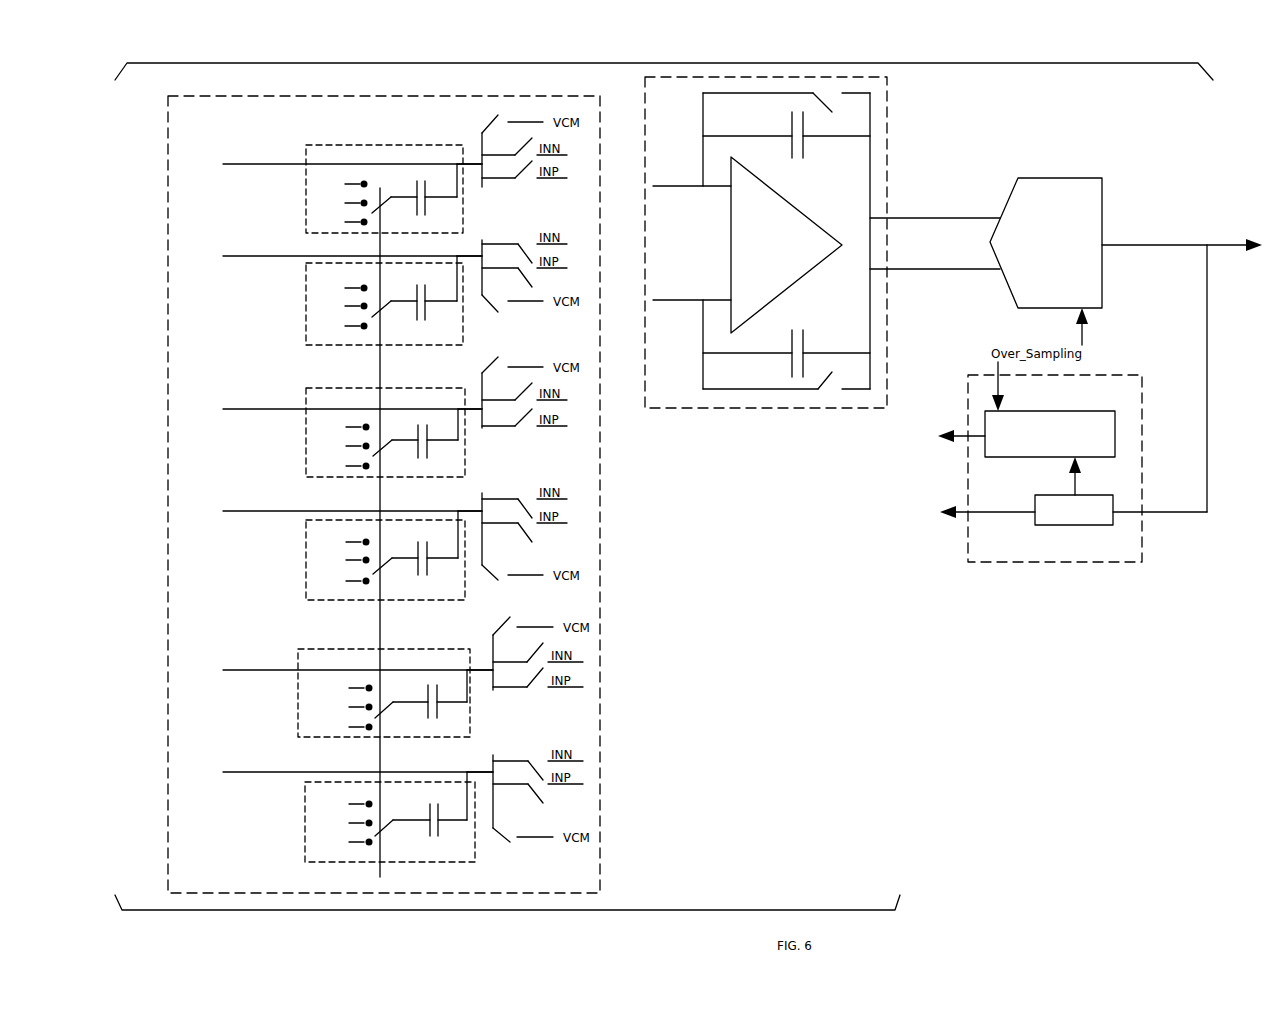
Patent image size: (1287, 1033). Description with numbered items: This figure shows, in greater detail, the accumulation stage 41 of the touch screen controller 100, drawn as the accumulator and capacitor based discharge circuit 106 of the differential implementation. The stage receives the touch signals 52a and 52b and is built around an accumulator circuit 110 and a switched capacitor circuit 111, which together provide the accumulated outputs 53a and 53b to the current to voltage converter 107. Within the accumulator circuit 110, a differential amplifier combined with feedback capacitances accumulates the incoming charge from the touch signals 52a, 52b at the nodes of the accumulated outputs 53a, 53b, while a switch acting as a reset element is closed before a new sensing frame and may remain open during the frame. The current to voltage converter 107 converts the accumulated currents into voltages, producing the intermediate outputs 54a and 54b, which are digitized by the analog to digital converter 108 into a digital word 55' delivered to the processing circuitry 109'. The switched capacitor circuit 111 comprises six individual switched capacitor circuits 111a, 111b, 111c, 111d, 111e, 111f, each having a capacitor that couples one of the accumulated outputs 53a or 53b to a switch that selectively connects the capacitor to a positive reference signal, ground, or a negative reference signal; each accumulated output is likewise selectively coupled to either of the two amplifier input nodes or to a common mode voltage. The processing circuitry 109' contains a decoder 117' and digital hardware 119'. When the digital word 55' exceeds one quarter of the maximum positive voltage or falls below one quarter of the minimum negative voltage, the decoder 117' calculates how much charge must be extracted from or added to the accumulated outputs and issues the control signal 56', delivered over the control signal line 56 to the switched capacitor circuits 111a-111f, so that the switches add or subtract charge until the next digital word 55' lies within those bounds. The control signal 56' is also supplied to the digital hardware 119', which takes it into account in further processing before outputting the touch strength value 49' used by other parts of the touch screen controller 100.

The touch screen controller 100 is at (1238, 65).
The accumulation stage 41 is at (553, 63).
The accumulator and capacitor based discharge circuit 106 is at (290, 910).
The switched capacitor circuit 111 is at (600, 548).
The second switched capacitor circuit 111a is at (306, 197).
The first switched capacitor circuit 111b is at (306, 314).
The third switched capacitor circuit 111c is at (306, 452).
The fourth switched capacitor circuit 111d is at (306, 570).
The fifth switched capacitor circuit 111e is at (298, 695).
The sixth switched capacitor circuit 111f is at (305, 813).
The touch signal 52a is at (339, 418).
The touch signal 52b is at (339, 515).
The accumulated output 53a is at (572, 410).
The accumulated output 53b is at (574, 507).
The control signal 56 is at (396, 537).
The accumulator circuit 110 is at (743, 408).
The current to voltage converter 107 is at (802, 280).
The intermediate output 54a is at (935, 209).
The intermediate output 54b is at (935, 260).
The analog to digital converter 108 is at (1002, 278).
The digital word 55' is at (1182, 367).
The processing circuitry 109' is at (1054, 483).
The digital hardware 119' is at (1050, 421).
The decoder 117' is at (1074, 524).
The touch strength value 49' is at (943, 437).
The control signal 56' is at (1054, 488).